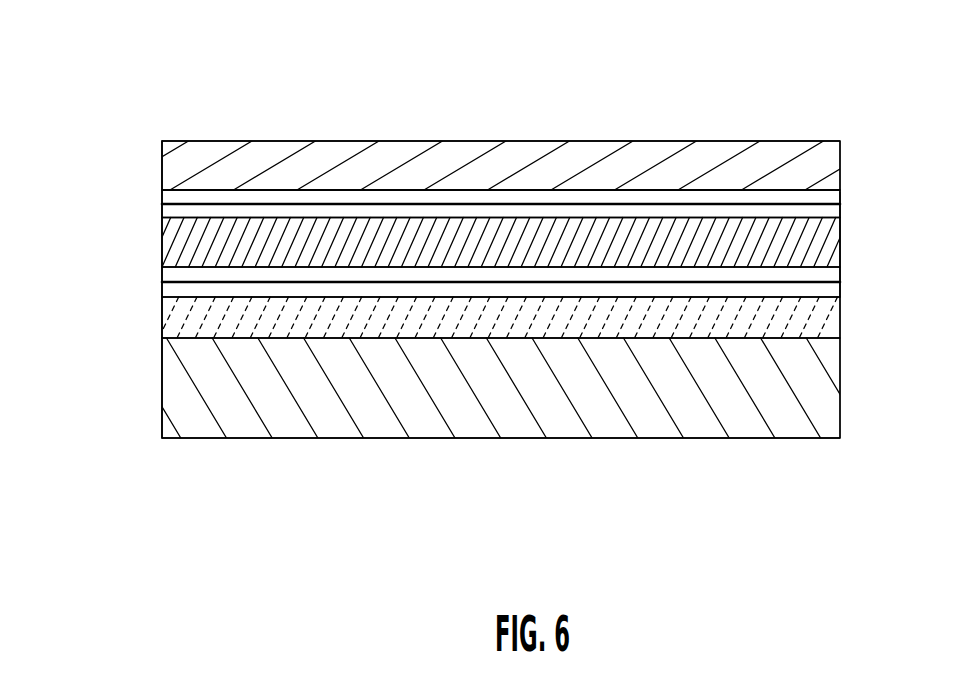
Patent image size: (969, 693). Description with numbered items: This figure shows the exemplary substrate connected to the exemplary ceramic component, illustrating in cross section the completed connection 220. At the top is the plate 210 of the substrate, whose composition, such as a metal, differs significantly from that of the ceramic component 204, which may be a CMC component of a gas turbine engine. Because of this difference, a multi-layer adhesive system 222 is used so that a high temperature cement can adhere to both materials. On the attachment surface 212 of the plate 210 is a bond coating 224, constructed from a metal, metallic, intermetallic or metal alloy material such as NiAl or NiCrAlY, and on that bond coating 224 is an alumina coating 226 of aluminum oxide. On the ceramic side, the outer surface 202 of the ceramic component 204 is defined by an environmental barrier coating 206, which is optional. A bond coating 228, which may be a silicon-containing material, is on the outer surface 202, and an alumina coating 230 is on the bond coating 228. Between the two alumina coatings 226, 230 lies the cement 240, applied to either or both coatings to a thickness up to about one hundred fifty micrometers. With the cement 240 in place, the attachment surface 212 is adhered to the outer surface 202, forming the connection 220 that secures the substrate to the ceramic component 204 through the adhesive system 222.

The outer surface 202 is at (383, 296).
The ceramic component 204 is at (333, 405).
The environmental barrier coating 206 is at (233, 330).
The plate 210 is at (370, 150).
The attachment surface 212 is at (768, 191).
The connection 220 is at (845, 192).
The adhesive system 222 is at (101, 213).
The bond coating 224 is at (462, 197).
The alumina coating 226 is at (518, 208).
The bond coating 228 is at (185, 288).
The alumina coating 230 is at (690, 272).
The cement 240 is at (603, 225).